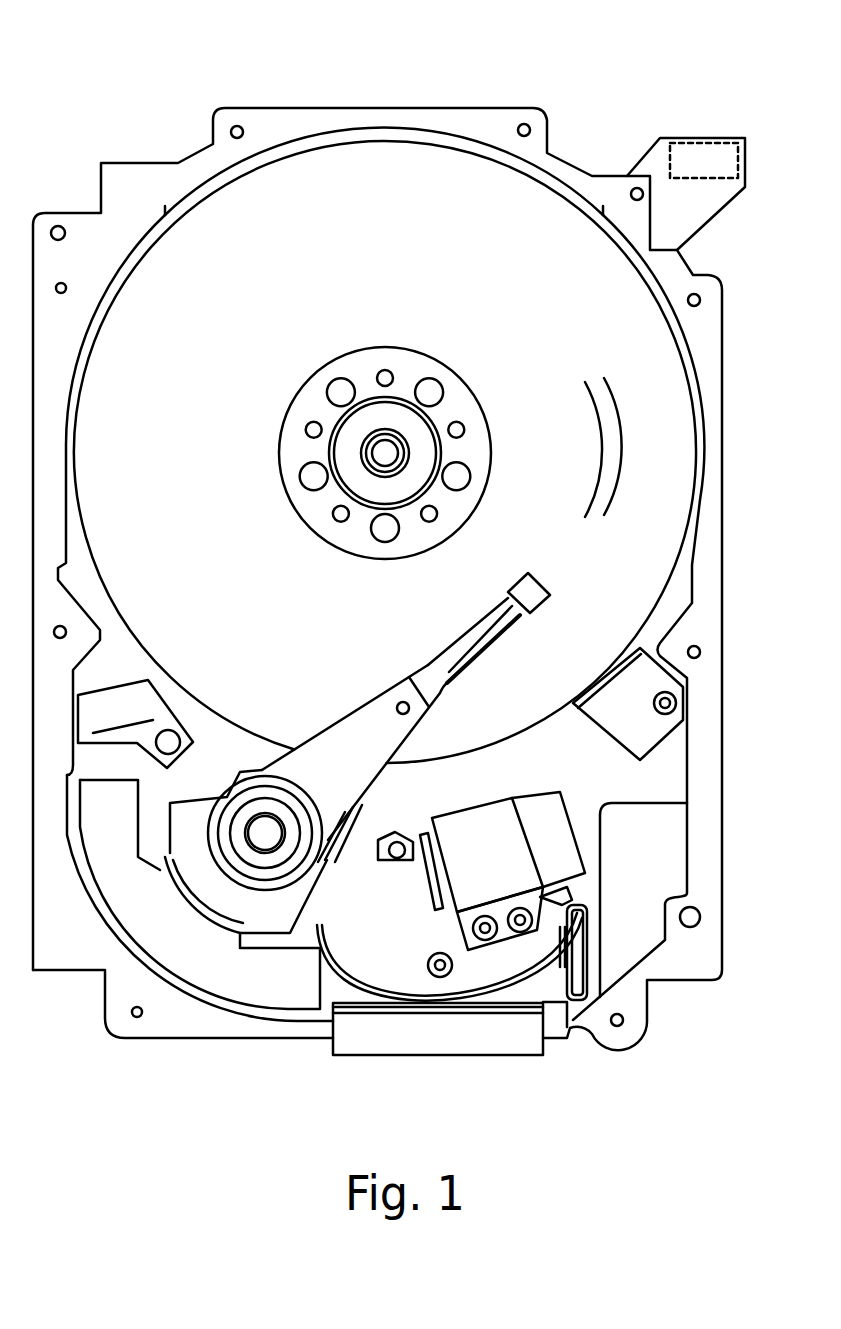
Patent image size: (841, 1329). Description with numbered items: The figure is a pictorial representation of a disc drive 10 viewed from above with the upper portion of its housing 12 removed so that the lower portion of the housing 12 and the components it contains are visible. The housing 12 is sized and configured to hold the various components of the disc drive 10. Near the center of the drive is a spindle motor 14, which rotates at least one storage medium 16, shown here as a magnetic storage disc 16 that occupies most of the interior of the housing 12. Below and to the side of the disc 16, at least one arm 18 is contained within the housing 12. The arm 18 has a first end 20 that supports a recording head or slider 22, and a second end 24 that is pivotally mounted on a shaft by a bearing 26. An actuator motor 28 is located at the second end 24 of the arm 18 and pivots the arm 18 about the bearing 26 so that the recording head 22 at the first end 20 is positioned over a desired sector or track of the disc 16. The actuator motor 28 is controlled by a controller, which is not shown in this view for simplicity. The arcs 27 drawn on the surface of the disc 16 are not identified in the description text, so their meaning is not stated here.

The disc drive 10 is at (140, 115).
The housing 12 is at (497, 108).
The spindle motor 14 is at (385, 453).
The storage medium 16 is at (376, 268).
The arm 18 is at (382, 712).
The first end 20 is at (462, 632).
The recording head 22 is at (530, 575).
The second end 24 is at (285, 773).
The bearing 26 is at (262, 836).
The data tracks 27 is at (623, 450).
The actuator motor 28 is at (132, 893).